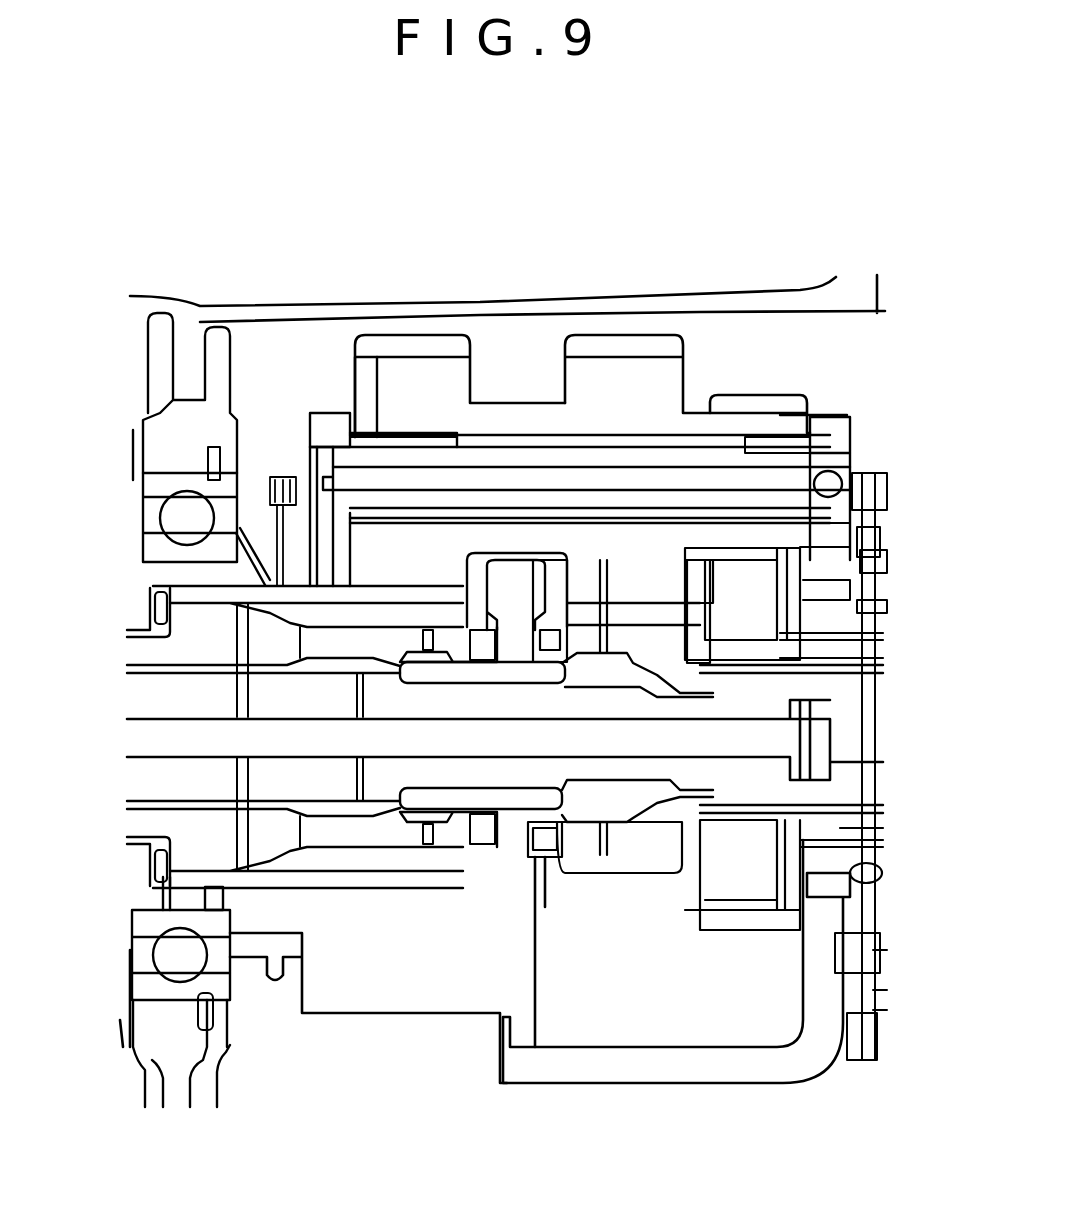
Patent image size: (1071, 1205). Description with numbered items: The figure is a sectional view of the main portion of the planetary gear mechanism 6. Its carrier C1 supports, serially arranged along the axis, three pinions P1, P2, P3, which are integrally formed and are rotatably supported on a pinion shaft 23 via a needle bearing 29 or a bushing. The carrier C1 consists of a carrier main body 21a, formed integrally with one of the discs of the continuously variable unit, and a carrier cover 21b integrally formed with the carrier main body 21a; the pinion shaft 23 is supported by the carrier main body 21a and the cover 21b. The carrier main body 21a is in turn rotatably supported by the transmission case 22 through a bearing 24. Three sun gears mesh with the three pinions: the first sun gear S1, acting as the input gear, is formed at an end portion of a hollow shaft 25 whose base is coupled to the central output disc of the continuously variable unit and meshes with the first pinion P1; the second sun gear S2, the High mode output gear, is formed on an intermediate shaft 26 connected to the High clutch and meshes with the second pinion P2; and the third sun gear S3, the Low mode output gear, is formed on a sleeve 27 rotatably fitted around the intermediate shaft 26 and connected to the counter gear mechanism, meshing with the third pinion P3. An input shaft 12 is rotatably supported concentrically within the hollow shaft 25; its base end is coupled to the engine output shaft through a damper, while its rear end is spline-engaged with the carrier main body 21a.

The planetary gear mechanism 6 is at (820, 266).
The input shaft 12 is at (153, 707).
The carrier main body 21a is at (275, 545).
The carrier cover 21b is at (730, 1070).
The transmission case 22 is at (200, 315).
The pinion shaft 23 is at (513, 457).
The bearing 24 is at (180, 528).
The hollow shaft 25 is at (183, 653).
The intermediate shaft 26 is at (852, 690).
The sleeve 27 is at (850, 645).
The needle bearing 29 is at (370, 380).
The first pinion P1 is at (430, 373).
The second pinion P2 is at (610, 350).
The third pinion P3 is at (770, 403).
The carrier C1 is at (866, 406).
The first sun gear S1 is at (362, 865).
The second sun gear S2 is at (578, 870).
The third sun gear S3 is at (733, 923).